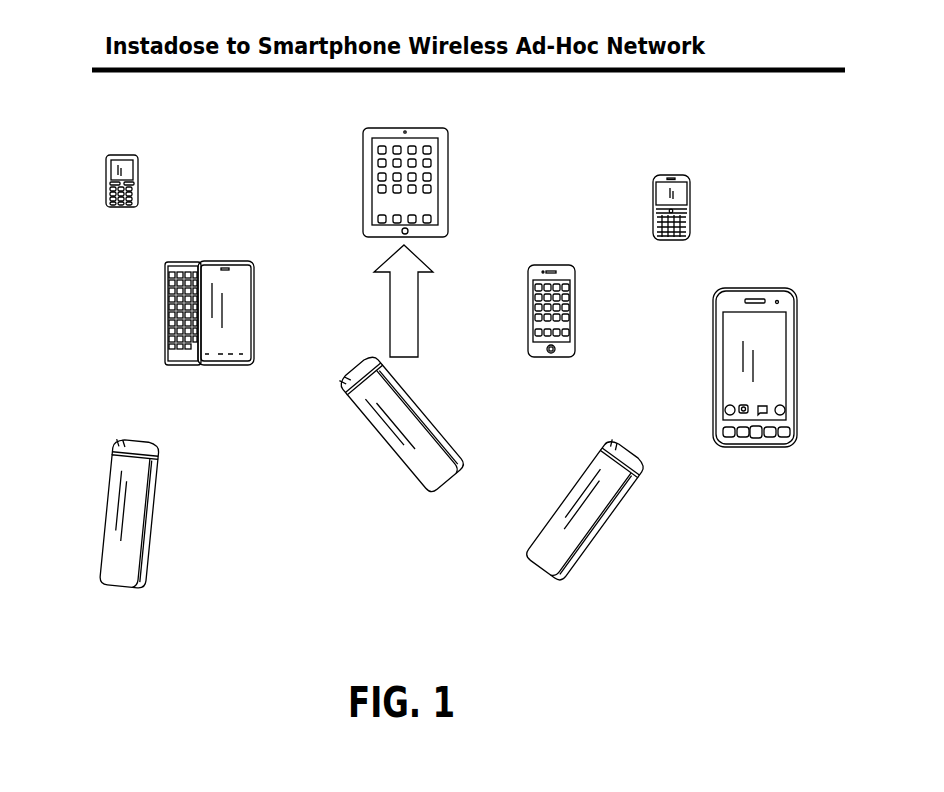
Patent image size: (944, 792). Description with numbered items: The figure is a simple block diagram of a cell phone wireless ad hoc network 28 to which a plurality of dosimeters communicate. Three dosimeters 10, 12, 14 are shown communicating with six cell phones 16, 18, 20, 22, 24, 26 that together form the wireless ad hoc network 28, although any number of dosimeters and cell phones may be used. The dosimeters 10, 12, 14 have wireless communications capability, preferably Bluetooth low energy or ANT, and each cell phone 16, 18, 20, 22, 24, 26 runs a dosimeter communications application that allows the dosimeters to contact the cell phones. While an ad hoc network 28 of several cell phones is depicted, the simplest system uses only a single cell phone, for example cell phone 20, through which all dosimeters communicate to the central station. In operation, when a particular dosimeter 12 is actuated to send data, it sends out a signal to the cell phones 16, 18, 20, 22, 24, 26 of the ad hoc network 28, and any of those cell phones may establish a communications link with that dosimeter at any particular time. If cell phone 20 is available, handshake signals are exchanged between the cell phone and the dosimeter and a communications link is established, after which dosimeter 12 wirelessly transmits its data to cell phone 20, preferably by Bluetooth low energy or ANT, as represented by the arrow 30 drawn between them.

The dosimeter 10 is at (158, 500).
The dosimeter 12 is at (381, 447).
The dosimeter 14 is at (607, 530).
The cell phone 16 is at (139, 182).
The cell phone 18 is at (254, 290).
The cell phone 20 is at (449, 158).
The cell phone 22 is at (576, 312).
The cell phone 24 is at (691, 195).
The cell phone 26 is at (798, 353).
The wireless ad hoc network 28 is at (122, 316).
The arrow 30 is at (419, 292).